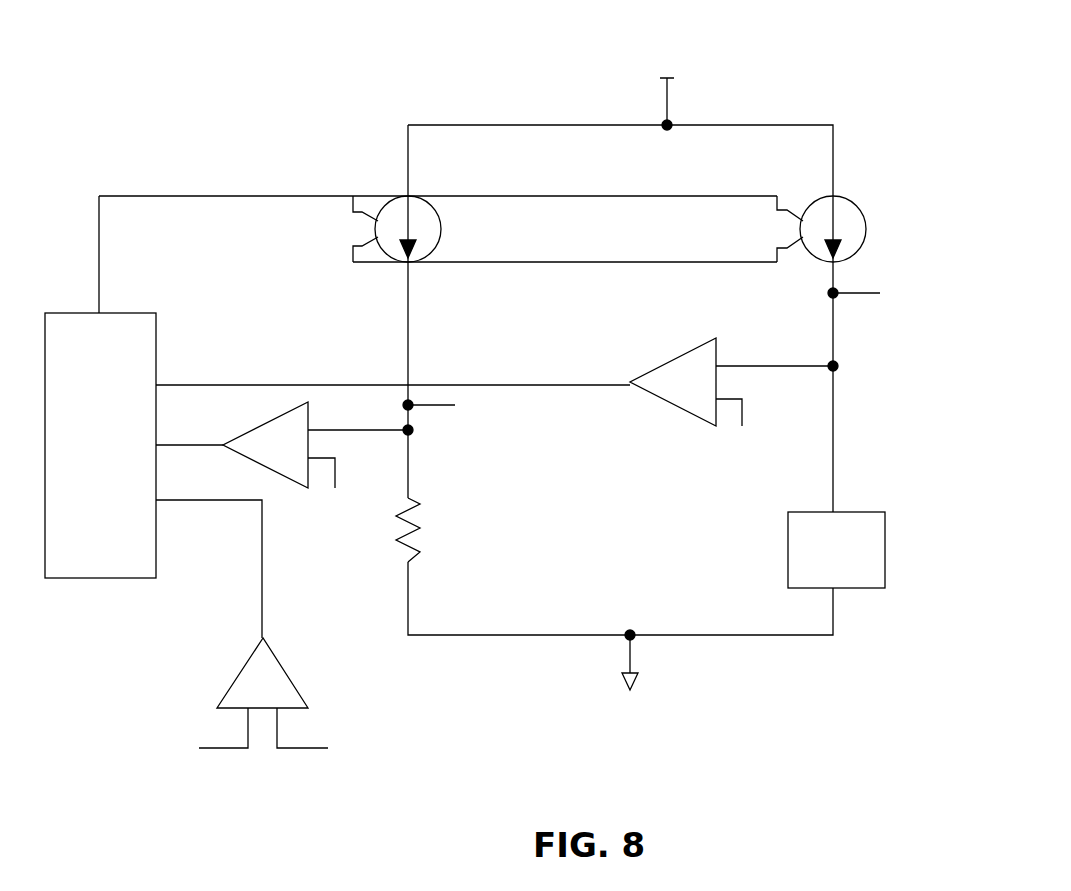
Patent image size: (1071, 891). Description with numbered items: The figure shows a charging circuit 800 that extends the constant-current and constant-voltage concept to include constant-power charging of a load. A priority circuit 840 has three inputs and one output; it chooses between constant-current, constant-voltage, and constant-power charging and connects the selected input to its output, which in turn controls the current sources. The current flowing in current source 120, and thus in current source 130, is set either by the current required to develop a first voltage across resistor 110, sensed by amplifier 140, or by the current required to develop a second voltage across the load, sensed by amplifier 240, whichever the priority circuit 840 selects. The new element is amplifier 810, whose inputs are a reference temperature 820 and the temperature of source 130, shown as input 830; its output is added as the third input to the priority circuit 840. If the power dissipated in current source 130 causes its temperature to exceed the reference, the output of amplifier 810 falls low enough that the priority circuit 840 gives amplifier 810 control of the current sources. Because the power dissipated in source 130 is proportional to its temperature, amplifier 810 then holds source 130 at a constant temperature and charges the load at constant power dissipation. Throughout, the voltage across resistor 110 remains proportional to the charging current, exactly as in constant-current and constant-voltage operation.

The circuit 800 is at (541, 72).
The current source 120 is at (436, 203).
The current source 130 is at (820, 193).
The resistor 110 is at (430, 536).
The comparator 140 is at (240, 440).
The comparator 240 is at (657, 366).
The amplifier 810 is at (282, 665).
The reference temperature input 820 is at (166, 765).
The source temperature input 830 is at (363, 768).
The priority circuit 840 is at (83, 578).